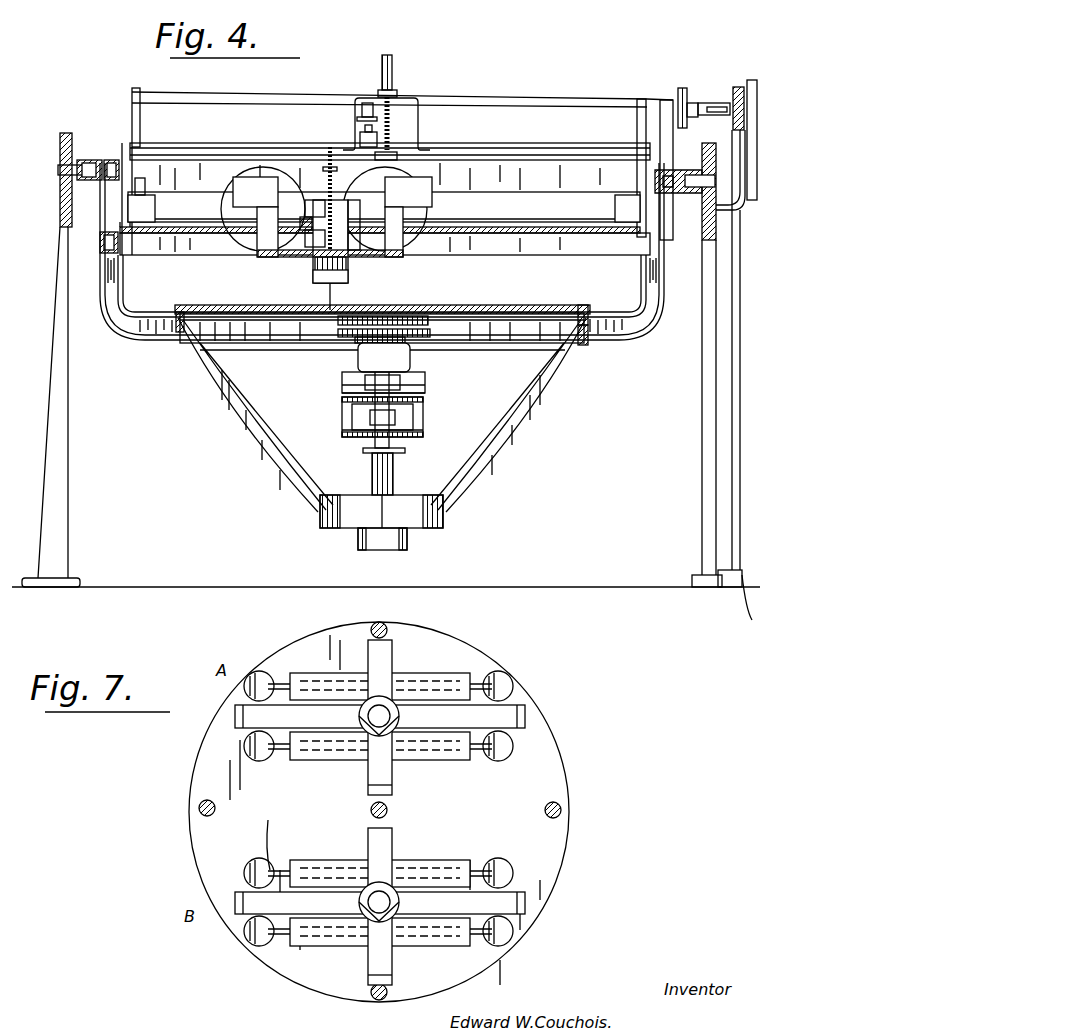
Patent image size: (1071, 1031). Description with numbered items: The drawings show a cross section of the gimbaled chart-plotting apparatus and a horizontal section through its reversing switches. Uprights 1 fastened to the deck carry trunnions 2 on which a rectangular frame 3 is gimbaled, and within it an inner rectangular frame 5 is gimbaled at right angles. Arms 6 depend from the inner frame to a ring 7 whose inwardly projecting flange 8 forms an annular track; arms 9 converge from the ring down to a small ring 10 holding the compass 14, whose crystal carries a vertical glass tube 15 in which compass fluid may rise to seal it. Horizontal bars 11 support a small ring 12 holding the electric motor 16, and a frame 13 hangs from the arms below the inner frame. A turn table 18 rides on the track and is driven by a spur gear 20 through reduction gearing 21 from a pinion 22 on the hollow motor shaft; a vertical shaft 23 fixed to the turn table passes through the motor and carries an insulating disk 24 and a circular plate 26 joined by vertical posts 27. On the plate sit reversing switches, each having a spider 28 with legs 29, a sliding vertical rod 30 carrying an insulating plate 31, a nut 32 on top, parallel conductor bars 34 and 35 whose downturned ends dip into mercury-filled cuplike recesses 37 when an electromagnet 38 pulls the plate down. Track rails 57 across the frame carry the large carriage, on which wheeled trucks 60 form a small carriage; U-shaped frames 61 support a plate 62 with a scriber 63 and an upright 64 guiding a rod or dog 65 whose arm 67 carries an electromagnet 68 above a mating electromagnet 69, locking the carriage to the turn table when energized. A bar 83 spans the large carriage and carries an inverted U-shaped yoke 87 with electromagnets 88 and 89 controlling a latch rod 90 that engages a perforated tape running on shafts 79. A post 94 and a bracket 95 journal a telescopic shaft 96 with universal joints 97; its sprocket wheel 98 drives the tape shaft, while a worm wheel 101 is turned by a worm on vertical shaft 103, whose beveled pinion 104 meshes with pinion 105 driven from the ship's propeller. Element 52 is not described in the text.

In FIG. 4, the uprights 1 is at (60, 518).
In FIG. 4, the trunnions 2 is at (58, 168).
In FIG. 4, the rectangular frame 3 is at (88, 160).
In FIG. 4, the inner rectangular frame 5 is at (112, 160).
In FIG. 4, the arms 6 is at (650, 320).
In FIG. 4, the ring 7 is at (592, 340).
In FIG. 4, the flange 8 is at (590, 322).
In FIG. 4, the arms 9 is at (520, 430).
In FIG. 4, the small ring 10 is at (445, 515).
In FIG. 4, the horizontal bars 11 is at (505, 360).
In FIG. 4, the small ring 12 is at (345, 380).
In FIG. 4, the frame 13 is at (190, 245).
In FIG. 4, the compass 14 is at (405, 510).
In FIG. 4, the glass tube 15 is at (372, 480).
In FIG. 4, the electric motor 16 is at (410, 343).
In FIG. 4, the turn table 18 is at (480, 306).
In FIG. 4, the spur gear 20 is at (415, 329).
In FIG. 4, the reduction gearing 21 is at (385, 316).
In FIG. 4, the pinion 22 is at (425, 375).
In FIG. 4, the disk 24 is at (425, 410).
In FIG. 4, the circular plate 26 is at (423, 432).
In FIG. 7, the circular plate 26 is at (548, 782).
In FIG. 4, the vertical posts 27 is at (408, 381).
In FIG. 7, the vertical posts 27 is at (562, 810).
In FIG. 4, the collar 52 is at (405, 450).
In FIG. 4, the track rails 57 is at (128, 233).
In FIG. 4, the wheeled trucks 60 is at (396, 217).
In FIG. 4, the U-shaped frames 61 is at (240, 208).
In FIG. 4, the plate 62 is at (300, 250).
In FIG. 4, the scriber 63 is at (333, 298).
In FIG. 4, the upright 64 is at (352, 238).
In FIG. 4, the rod or dog 65 is at (335, 226).
In FIG. 4, the arm 67 is at (328, 168).
In FIG. 4, the electromagnet 68 is at (310, 205).
In FIG. 4, the electromagnet 69 is at (308, 240).
In FIG. 4, the shafts 79 is at (520, 103).
In FIG. 4, the bar 83 is at (490, 155).
In FIG. 4, the inverted U-shaped yoke 87 is at (418, 120).
In FIG. 4, the electromagnet 88 is at (368, 103).
In FIG. 4, the electromagnet 89 is at (358, 135).
In FIG. 4, the latch rod 90 is at (394, 92).
In FIG. 4, the post 94 is at (660, 131).
In FIG. 4, the bracket 95 is at (752, 190).
In FIG. 4, the telescopic shaft 96 is at (712, 102).
In FIG. 4, the universal joint 97 is at (697, 115).
In FIG. 4, the sprocket wheel 98 is at (678, 95).
In FIG. 4, the worm wheel 101 is at (740, 90).
In FIG. 4, the vertical shaft 103 is at (738, 310).
In FIG. 4, the beveled pinion 104 is at (702, 562).
In FIG. 4, the beveled pinion 105 is at (737, 608).
In FIG. 7, the vertical shaft 23 is at (388, 808).
In FIG. 7, the spider 28 is at (420, 718).
In FIG. 7, the legs 29 is at (527, 720).
In FIG. 7, the vertical rod 30 is at (383, 712).
In FIG. 7, the plate 31 is at (425, 673).
In FIG. 7, the nut 32 is at (370, 732).
In FIG. 7, the conductor bar 34 is at (510, 700).
In FIG. 7, the conductor bar 35 is at (505, 705).
In FIG. 7, the cuplike recesses 37 is at (268, 752).
In FIG. 7, the electromagnet 38 is at (395, 735).